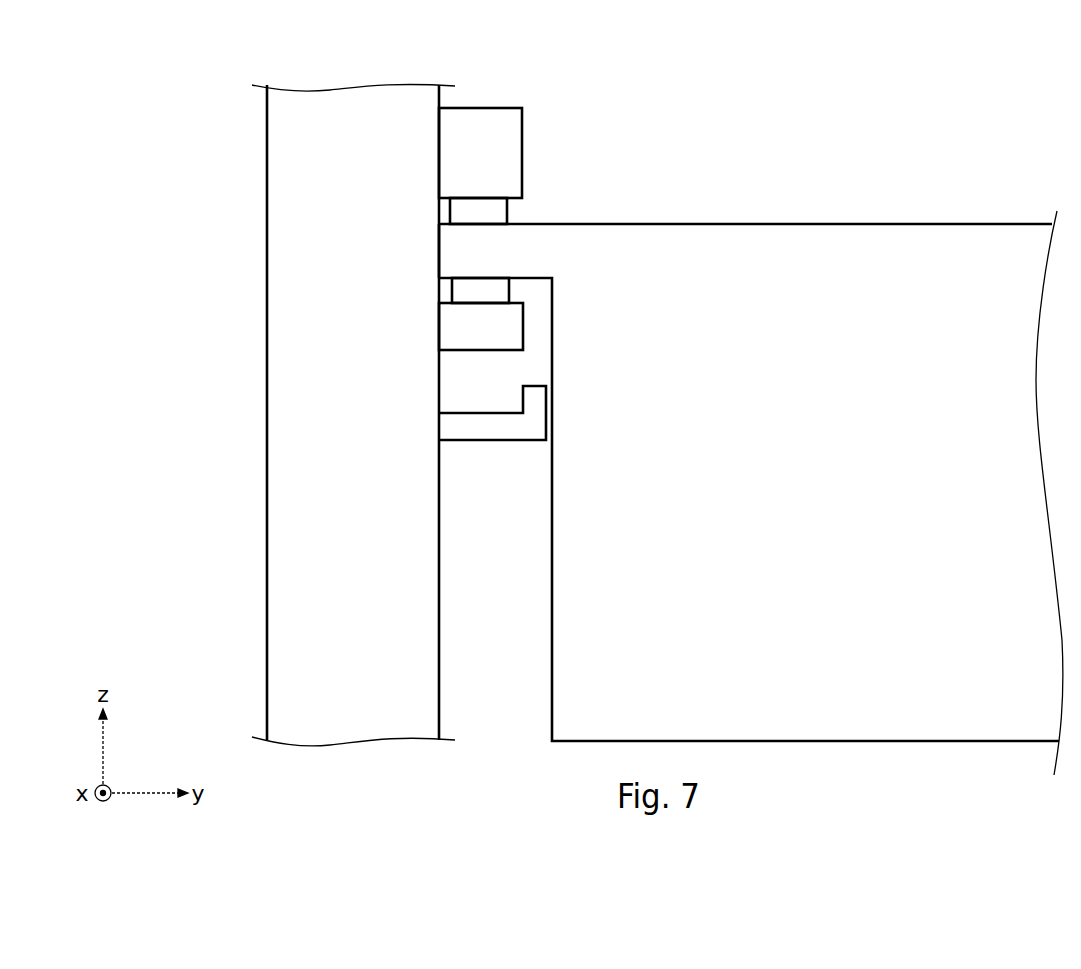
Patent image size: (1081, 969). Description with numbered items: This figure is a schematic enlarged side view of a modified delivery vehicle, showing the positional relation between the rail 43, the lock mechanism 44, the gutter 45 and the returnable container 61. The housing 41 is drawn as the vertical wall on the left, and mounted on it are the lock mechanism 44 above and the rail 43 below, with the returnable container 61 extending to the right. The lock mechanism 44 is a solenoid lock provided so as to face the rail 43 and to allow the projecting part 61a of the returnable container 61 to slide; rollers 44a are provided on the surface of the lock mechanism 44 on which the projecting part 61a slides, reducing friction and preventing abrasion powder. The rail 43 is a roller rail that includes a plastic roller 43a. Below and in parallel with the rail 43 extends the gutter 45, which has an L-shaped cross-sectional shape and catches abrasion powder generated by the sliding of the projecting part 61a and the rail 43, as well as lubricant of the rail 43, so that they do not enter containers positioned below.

The housing 41 is at (287, 168).
The rail 43 is at (445, 332).
The roller 43a is at (447, 293).
The lock mechanism 44 is at (523, 157).
The roller 44a is at (508, 216).
The gutter 45 is at (488, 428).
The returnable container 61 is at (842, 238).
The projecting part 61a is at (447, 252).